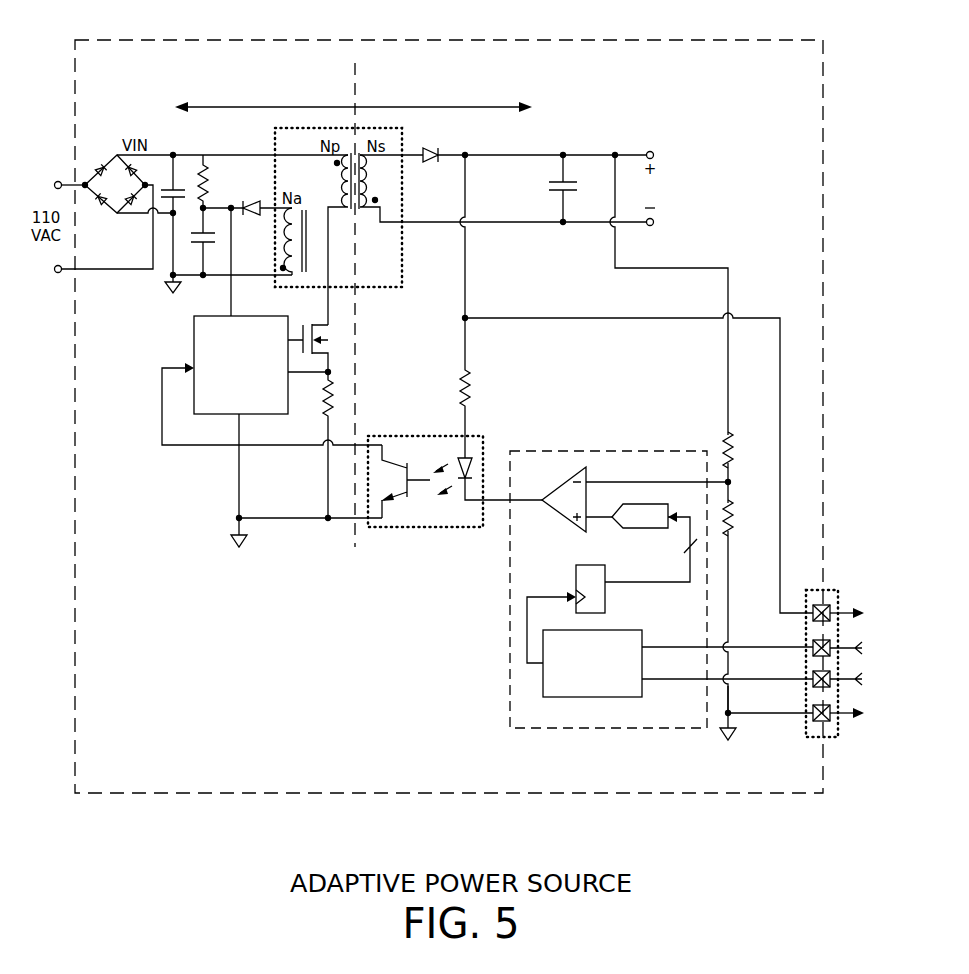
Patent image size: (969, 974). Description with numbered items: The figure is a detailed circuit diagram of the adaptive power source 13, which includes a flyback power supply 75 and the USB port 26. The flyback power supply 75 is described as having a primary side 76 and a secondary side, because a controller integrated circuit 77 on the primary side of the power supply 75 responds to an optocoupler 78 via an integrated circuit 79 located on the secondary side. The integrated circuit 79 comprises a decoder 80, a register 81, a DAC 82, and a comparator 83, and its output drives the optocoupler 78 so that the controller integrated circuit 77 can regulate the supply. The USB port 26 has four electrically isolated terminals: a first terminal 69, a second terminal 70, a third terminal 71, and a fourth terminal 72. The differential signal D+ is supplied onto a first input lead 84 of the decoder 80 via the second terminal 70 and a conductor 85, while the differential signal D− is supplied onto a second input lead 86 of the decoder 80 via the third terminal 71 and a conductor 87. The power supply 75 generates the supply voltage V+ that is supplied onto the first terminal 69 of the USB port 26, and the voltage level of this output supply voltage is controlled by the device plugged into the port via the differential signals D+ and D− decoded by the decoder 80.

The adaptive power source 13 is at (103, 60).
The flyback power supply 75 is at (632, 78).
The primary side 76 is at (353, 88).
The controller integrated circuit 77 is at (231, 368).
The optocoupler 78 is at (388, 436).
The integrated circuit 79 is at (626, 451).
The decoder 80 is at (583, 672).
The register 81 is at (576, 576).
The DAC 82 is at (645, 530).
The comparator 83 is at (569, 477).
The first input lead 84 is at (649, 646).
The conductor 85 is at (744, 646).
The second input lead 86 is at (649, 681).
The conductor 87 is at (744, 681).
The first terminal 69 is at (830, 608).
The second terminal 70 is at (813, 645).
The third terminal 71 is at (813, 676).
The fourth terminal 72 is at (813, 710).
The USB port 26 is at (828, 691).